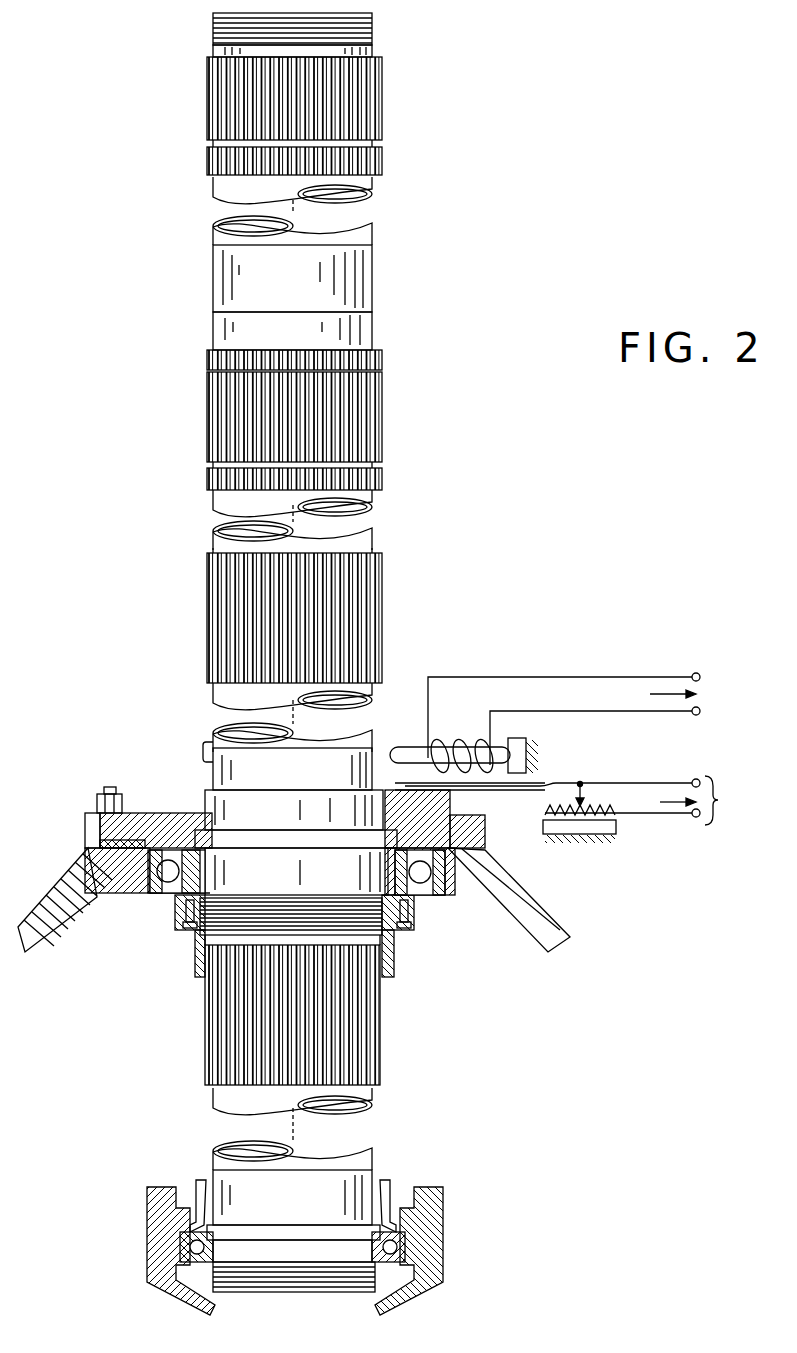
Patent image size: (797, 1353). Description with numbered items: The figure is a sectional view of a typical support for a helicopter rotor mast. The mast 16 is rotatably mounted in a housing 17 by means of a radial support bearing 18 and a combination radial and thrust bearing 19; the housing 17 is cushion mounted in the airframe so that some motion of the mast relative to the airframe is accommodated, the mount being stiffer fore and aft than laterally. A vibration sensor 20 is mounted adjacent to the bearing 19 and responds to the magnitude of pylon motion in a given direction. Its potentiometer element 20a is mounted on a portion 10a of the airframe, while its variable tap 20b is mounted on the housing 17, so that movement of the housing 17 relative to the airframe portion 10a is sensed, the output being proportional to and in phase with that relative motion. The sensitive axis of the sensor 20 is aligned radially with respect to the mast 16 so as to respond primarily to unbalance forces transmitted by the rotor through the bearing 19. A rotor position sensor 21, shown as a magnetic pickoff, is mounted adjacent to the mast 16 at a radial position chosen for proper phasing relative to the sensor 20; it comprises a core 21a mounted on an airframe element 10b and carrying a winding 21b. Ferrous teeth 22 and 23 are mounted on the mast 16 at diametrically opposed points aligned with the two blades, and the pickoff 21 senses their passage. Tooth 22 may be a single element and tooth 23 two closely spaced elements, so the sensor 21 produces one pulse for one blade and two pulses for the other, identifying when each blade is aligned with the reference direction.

The mast 16 is at (356, 331).
The housing 17 is at (524, 905).
The radial support bearing 18 is at (185, 1246).
The combination radial and thrust bearing 19 is at (432, 893).
The vibration sensor 20 is at (663, 897).
The potentiometer element 20a is at (560, 811).
The variable tap 20b is at (548, 784).
The rotor position sensor 21 is at (563, 649).
The core 21a is at (392, 746).
The winding 21b is at (447, 748).
The ferrous tooth 22 is at (383, 755).
The ferrous tooth 23 is at (205, 750).
The portion of the airframe 10a is at (612, 827).
The airframe element 10b is at (525, 742).